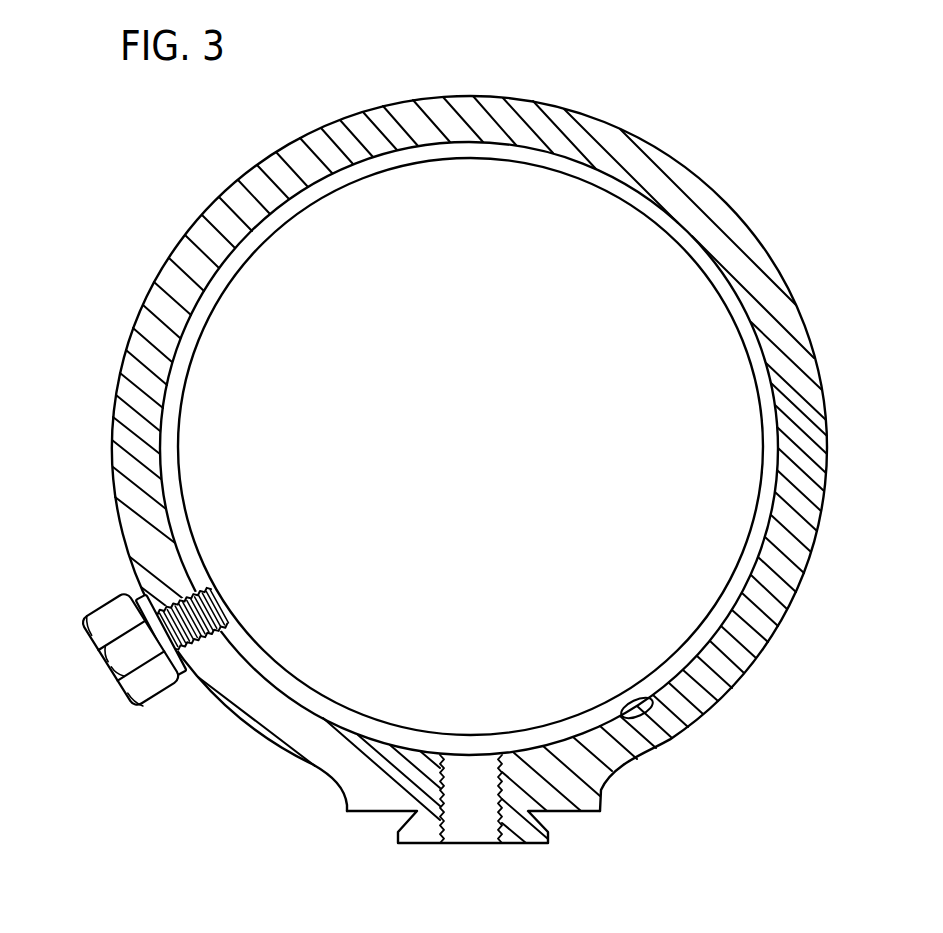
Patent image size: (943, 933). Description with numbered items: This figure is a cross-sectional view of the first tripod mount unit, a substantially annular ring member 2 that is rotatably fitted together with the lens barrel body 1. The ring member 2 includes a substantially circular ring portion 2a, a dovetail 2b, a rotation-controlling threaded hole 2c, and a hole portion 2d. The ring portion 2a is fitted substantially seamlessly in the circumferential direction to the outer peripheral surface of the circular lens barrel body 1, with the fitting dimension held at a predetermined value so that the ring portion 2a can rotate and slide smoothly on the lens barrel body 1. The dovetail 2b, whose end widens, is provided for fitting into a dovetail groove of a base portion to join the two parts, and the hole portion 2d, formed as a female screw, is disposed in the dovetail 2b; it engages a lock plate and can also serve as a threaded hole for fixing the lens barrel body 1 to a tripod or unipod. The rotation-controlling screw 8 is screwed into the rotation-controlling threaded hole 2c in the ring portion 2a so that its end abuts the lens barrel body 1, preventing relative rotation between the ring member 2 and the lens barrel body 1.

The lens barrel body 1 is at (655, 280).
The ring member 2 is at (715, 698).
The ring portion 2a is at (654, 714).
The dovetail 2b is at (420, 822).
The rotation-controlling threaded hole 2c is at (168, 610).
The hole portion 2d is at (468, 824).
The rotation-controlling screw 8 is at (120, 660).